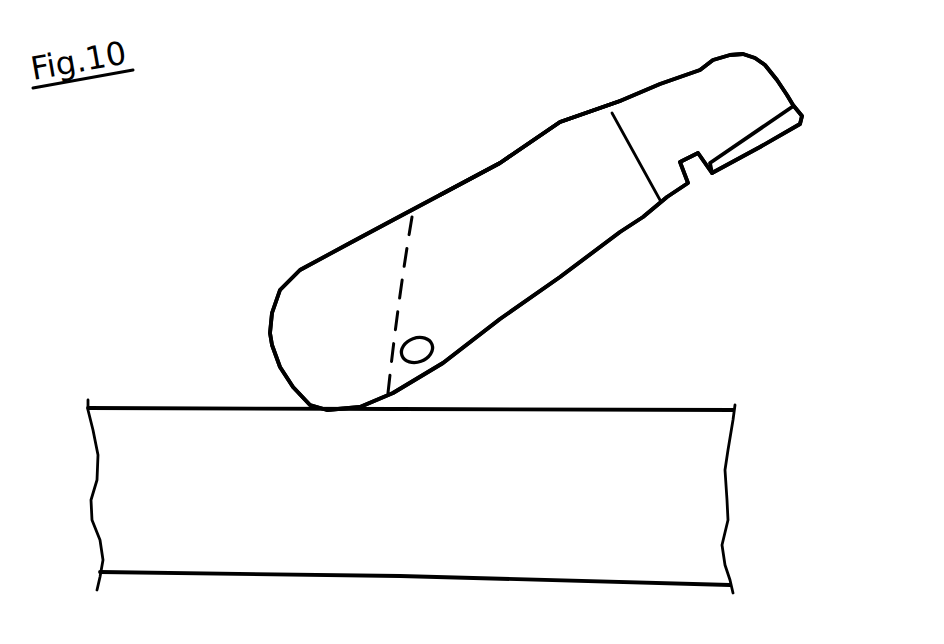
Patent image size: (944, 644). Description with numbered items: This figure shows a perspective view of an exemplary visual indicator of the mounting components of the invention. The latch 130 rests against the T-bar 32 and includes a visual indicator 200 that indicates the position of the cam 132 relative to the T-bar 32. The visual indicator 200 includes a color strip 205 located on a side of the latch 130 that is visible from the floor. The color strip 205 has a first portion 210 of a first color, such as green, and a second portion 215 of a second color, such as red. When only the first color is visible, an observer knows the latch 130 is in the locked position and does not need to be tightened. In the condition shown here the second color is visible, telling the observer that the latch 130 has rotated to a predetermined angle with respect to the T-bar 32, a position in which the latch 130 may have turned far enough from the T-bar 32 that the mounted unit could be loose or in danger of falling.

The latch 130 is at (655, 77).
The visual indicator 200 is at (500, 187).
The color strip 205 is at (643, 217).
The first portion 210 is at (570, 215).
The second portion 215 is at (370, 327).
The cam 132 is at (460, 353).
The T-bar 32 is at (710, 408).